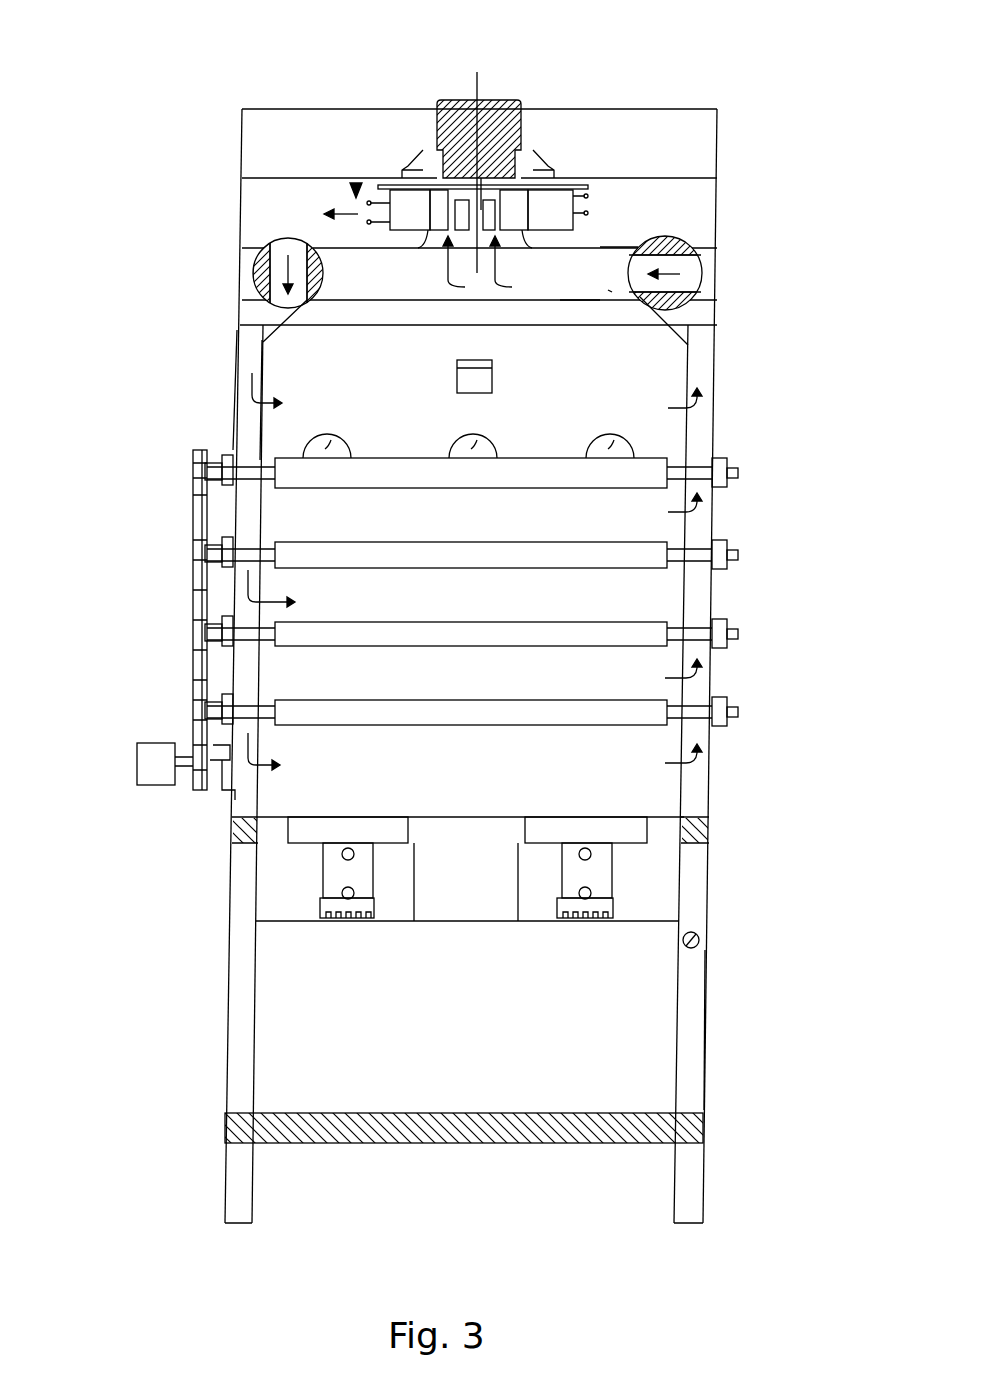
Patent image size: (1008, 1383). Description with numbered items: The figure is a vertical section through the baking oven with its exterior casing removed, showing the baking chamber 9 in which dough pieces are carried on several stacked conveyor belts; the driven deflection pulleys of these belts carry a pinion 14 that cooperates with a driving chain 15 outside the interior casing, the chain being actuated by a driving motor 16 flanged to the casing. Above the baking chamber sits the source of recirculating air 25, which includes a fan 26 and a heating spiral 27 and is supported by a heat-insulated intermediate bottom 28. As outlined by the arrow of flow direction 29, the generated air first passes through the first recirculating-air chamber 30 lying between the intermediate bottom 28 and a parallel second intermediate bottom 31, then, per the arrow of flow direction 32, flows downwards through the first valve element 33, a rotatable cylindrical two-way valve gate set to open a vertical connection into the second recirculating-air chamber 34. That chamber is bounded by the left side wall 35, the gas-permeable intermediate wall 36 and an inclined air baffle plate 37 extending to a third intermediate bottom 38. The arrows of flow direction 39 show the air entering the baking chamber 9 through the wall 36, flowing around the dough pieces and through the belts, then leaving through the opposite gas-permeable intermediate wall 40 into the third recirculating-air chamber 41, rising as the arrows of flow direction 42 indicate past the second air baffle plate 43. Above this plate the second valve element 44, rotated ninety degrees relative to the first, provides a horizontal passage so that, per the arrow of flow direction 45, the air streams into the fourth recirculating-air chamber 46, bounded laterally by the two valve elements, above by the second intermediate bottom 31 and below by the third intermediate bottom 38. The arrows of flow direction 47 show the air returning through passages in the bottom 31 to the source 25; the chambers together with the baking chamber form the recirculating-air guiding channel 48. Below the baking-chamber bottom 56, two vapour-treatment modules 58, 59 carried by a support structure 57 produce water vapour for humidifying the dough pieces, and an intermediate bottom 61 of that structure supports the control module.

The baking chamber 9 is at (503, 783).
The pinion 14 is at (205, 490).
The driving chain 15 is at (193, 610).
The driving motor 16 is at (157, 745).
The source of recirculating air 25 is at (494, 90).
The fan 26 is at (552, 203).
The heating spiral 27 is at (592, 178).
The intermediate bottom 28 is at (640, 180).
The arrow of flow direction 29 is at (340, 207).
The first recirculating-air chamber 30 is at (252, 200).
The second intermediate bottom 31 is at (580, 300).
The arrow of flow direction 32 is at (262, 268).
The first valve element 33 is at (262, 292).
The second recirculating-air chamber 34 is at (243, 353).
The left side wall 35 is at (262, 437).
The gas-permeable intermediate wall 36 is at (207, 455).
The air baffle plate 37 is at (262, 325).
The third intermediate bottom 38 is at (603, 245).
The arrows of flow direction 39 is at (244, 387).
The gas-permeable intermediate wall 40 is at (683, 788).
The third recirculating-air chamber 41 is at (697, 732).
The arrows of flow direction 42 is at (667, 511).
The air baffle plate 43 is at (663, 320).
The second valve element 44 is at (701, 288).
The arrow of flow direction 45 is at (670, 276).
The fourth recirculating-air chamber 46 is at (608, 290).
The arrows of flow direction 47 is at (508, 283).
The recirculating-air guiding channel 48 is at (356, 184).
The baking-chamber bottom 56 is at (623, 817).
The support structure 57 is at (697, 1032).
The vapour-treatment module 58 is at (330, 886).
The vapour-treatment module 59 is at (605, 875).
The intermediate bottom 61 is at (617, 1113).